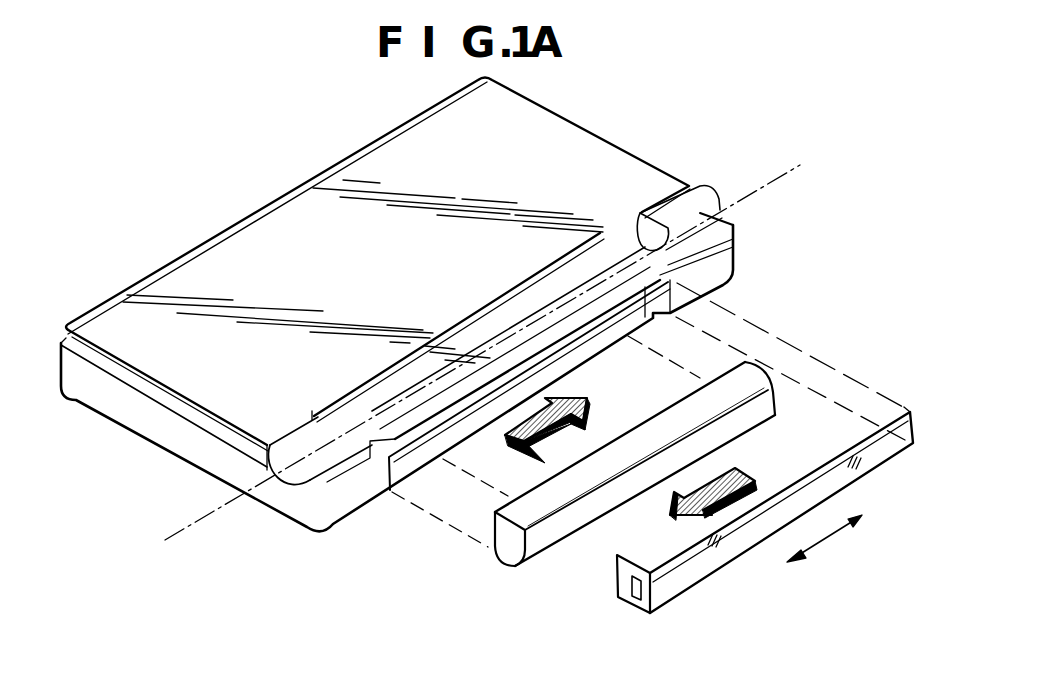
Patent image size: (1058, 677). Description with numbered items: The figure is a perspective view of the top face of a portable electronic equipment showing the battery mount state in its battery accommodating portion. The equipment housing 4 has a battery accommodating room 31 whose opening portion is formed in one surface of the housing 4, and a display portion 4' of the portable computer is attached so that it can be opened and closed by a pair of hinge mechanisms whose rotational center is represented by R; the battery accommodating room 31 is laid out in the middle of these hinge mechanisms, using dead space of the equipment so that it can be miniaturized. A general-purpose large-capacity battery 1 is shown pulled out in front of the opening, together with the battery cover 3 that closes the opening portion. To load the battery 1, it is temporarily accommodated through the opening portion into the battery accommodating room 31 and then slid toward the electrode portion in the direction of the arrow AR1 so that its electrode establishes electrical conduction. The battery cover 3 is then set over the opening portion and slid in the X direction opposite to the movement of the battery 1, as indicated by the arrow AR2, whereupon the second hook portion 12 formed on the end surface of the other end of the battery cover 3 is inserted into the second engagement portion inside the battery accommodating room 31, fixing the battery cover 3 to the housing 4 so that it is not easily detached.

The battery 1 is at (510, 548).
The battery cover 3 is at (617, 585).
The electronic equipment housing 4 is at (483, 379).
The display portion 4' is at (378, 274).
The second hook portion 12 is at (636, 600).
The battery accommodating room 31 is at (540, 372).
The rotational center of the hinge mechanisms R is at (757, 176).
The X direction X is at (824, 541).
The arrow indicating battery mount direction AR1 is at (571, 419).
The arrow indicating battery cover sliding direction AR2 is at (684, 505).